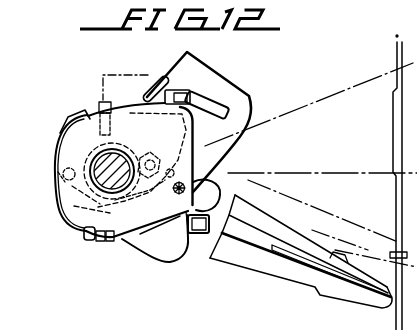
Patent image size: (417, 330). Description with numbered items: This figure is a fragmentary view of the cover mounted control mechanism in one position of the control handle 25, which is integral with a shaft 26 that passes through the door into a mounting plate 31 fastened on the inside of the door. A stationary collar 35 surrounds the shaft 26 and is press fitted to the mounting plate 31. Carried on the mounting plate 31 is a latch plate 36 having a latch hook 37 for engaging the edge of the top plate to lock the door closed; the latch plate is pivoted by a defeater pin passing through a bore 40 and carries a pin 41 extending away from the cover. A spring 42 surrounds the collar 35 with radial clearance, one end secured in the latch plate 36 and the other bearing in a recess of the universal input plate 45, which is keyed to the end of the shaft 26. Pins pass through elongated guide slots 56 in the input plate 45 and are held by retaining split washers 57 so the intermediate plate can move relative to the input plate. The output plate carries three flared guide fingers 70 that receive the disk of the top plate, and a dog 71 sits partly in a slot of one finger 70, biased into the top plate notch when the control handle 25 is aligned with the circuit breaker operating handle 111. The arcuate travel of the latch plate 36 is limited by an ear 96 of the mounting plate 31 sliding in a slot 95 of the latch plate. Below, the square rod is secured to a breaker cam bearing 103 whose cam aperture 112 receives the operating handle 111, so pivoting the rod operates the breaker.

The control handle 25 is at (272, 277).
The shaft 26 is at (86, 185).
The mounting plate 31 is at (137, 103).
The collar 35 is at (122, 149).
The latch plate 36 is at (231, 85).
The latch hook 37 is at (158, 83).
The bore 40 is at (206, 195).
The pin 41 is at (194, 143).
The spring 42 is at (132, 194).
The universal input plate 45 is at (56, 170).
The elongated guide slots 56 is at (57, 181).
The retaining split washers 57 is at (76, 168).
The guide fingers 70 is at (73, 113).
The dog 71 is at (88, 241).
The slot 95 is at (224, 104).
The ear 96 is at (172, 95).
The breaker cam bearing 103 is at (165, 247).
The circuit breaker operating handle 111 is at (203, 235).
The cam aperture 112 is at (185, 220).